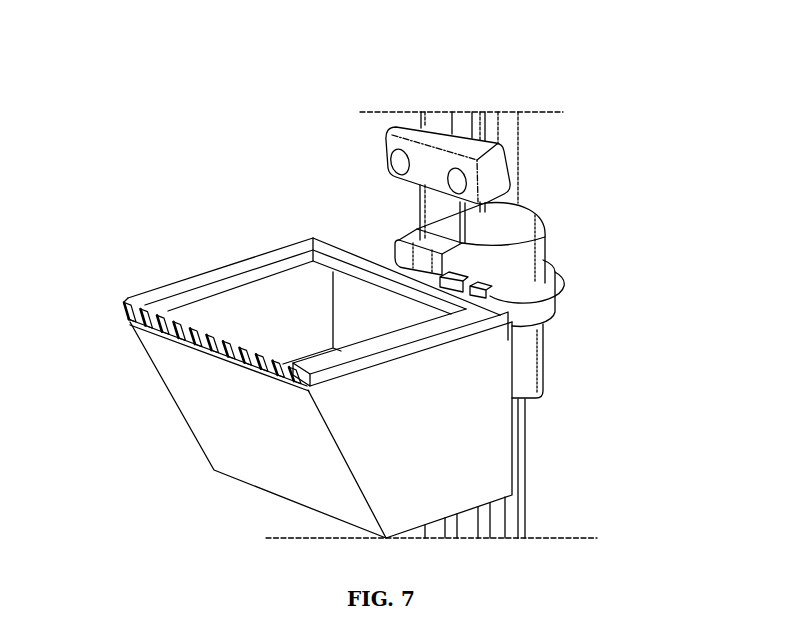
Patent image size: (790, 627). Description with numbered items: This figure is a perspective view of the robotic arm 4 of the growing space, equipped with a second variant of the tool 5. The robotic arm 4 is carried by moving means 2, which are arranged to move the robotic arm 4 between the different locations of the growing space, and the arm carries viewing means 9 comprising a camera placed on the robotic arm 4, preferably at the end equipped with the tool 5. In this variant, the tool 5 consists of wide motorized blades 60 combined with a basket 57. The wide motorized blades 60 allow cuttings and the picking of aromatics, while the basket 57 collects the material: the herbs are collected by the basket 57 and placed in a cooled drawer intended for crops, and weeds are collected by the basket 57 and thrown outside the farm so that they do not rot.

The moving means 2 is at (513, 146).
The robotic arm 4 is at (507, 254).
The viewing means 9 is at (413, 127).
The tool 5 is at (307, 379).
The wide motorized blades 60 is at (137, 300).
The basket 57 is at (225, 431).